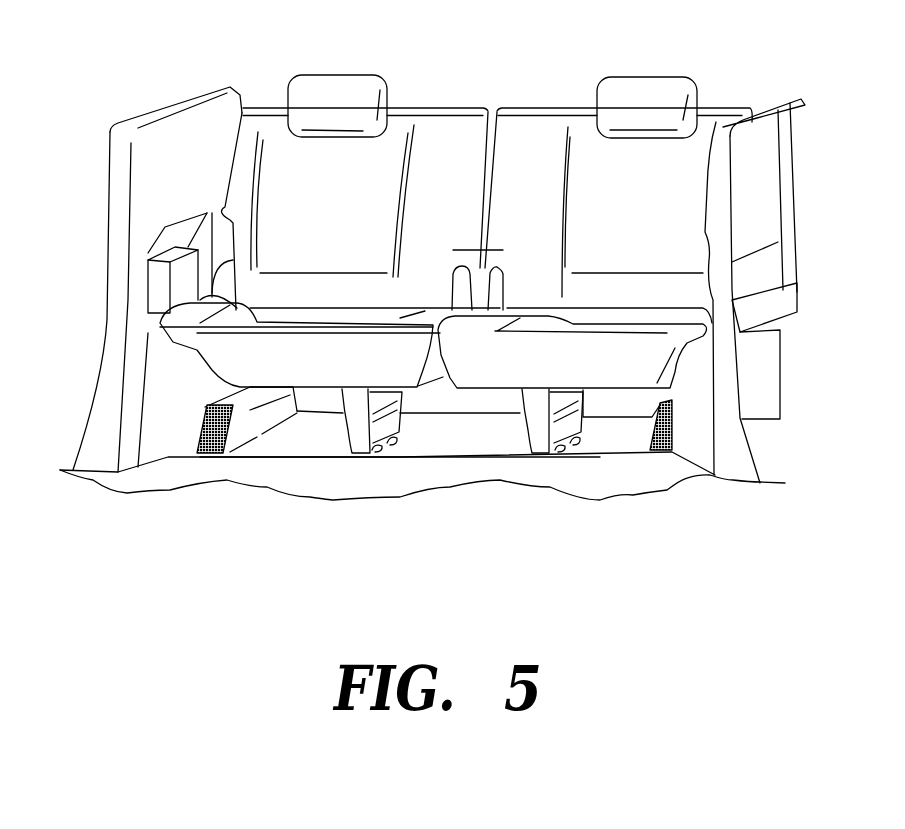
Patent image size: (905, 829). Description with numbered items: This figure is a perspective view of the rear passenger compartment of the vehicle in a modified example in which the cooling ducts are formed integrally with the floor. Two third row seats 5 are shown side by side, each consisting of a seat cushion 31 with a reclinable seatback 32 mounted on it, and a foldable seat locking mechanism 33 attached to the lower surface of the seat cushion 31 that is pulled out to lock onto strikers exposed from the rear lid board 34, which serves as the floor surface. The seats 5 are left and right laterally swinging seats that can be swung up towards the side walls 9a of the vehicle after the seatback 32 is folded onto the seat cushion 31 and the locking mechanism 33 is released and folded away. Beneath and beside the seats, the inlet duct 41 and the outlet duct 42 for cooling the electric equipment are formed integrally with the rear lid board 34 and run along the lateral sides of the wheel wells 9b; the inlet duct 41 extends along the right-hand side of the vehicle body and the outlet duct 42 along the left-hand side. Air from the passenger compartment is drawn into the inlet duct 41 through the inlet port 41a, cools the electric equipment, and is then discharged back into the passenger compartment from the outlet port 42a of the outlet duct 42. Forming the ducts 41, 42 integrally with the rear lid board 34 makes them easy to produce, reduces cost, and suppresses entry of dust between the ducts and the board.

The third row seat 5 is at (354, 73).
The seatback 32 is at (377, 183).
The seat cushion 31 is at (327, 360).
The seat locking mechanism 33 is at (393, 430).
The rear lid board 34 is at (478, 442).
The side wall 9a is at (153, 185).
The wheel well 9b is at (167, 427).
The inlet duct 41 is at (243, 413).
The inlet port 41a is at (203, 423).
The outlet duct 42 is at (654, 478).
The outlet port 42a is at (657, 422).